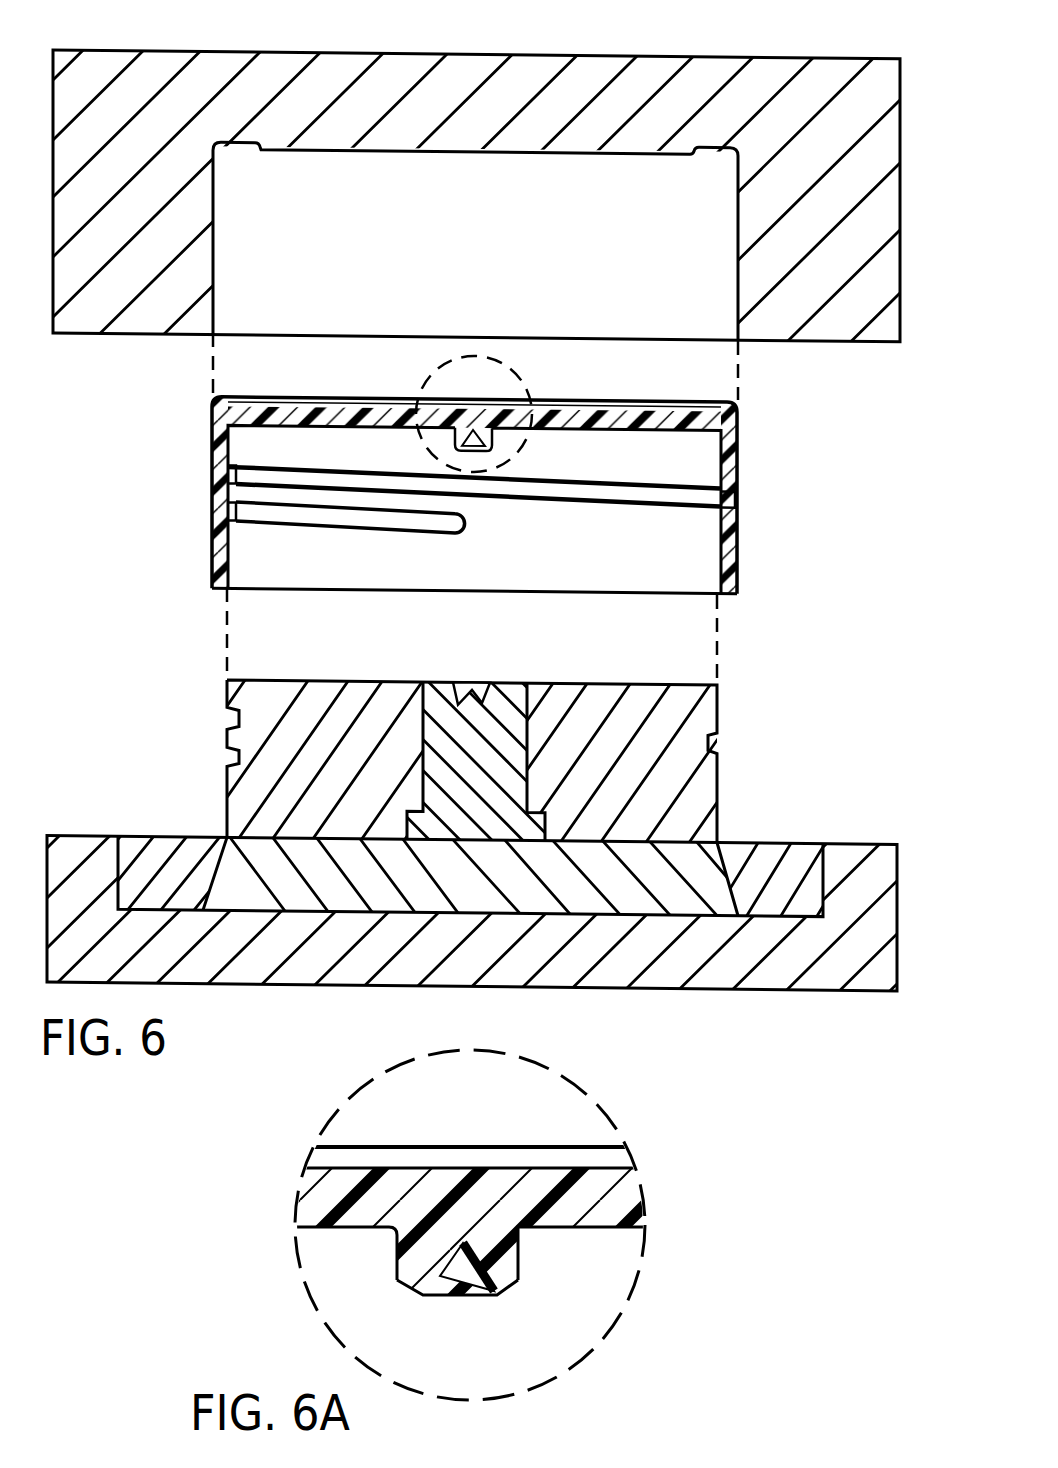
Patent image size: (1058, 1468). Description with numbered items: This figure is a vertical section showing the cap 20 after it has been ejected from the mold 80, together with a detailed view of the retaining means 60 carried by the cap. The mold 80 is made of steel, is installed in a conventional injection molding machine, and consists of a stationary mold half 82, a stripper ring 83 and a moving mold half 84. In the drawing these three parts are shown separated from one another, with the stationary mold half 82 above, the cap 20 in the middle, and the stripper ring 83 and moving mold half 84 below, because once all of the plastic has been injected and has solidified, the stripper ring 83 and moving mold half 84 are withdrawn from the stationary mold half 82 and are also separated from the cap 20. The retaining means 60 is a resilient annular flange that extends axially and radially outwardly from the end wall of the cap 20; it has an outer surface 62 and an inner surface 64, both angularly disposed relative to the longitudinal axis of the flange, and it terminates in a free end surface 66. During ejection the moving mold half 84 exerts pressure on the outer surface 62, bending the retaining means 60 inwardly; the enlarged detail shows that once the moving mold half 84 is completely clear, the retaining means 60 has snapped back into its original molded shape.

In FIG. 6, the mold 80 is at (529, 537).
In FIG. 6, the stationary mold half 82 is at (648, 58).
In FIG. 6, the stripper ring 83 is at (767, 850).
In FIG. 6, the moving mold half 84 is at (710, 988).
In FIG. 6, the cap 20 is at (755, 444).
In FIG. 6A, the retaining means 60 is at (443, 1225).
In FIG. 6A, the outer surface 62 is at (409, 1253).
In FIG. 6A, the inner surface 64 is at (443, 1273).
In FIG. 6A, the free end surface 66 is at (427, 1282).